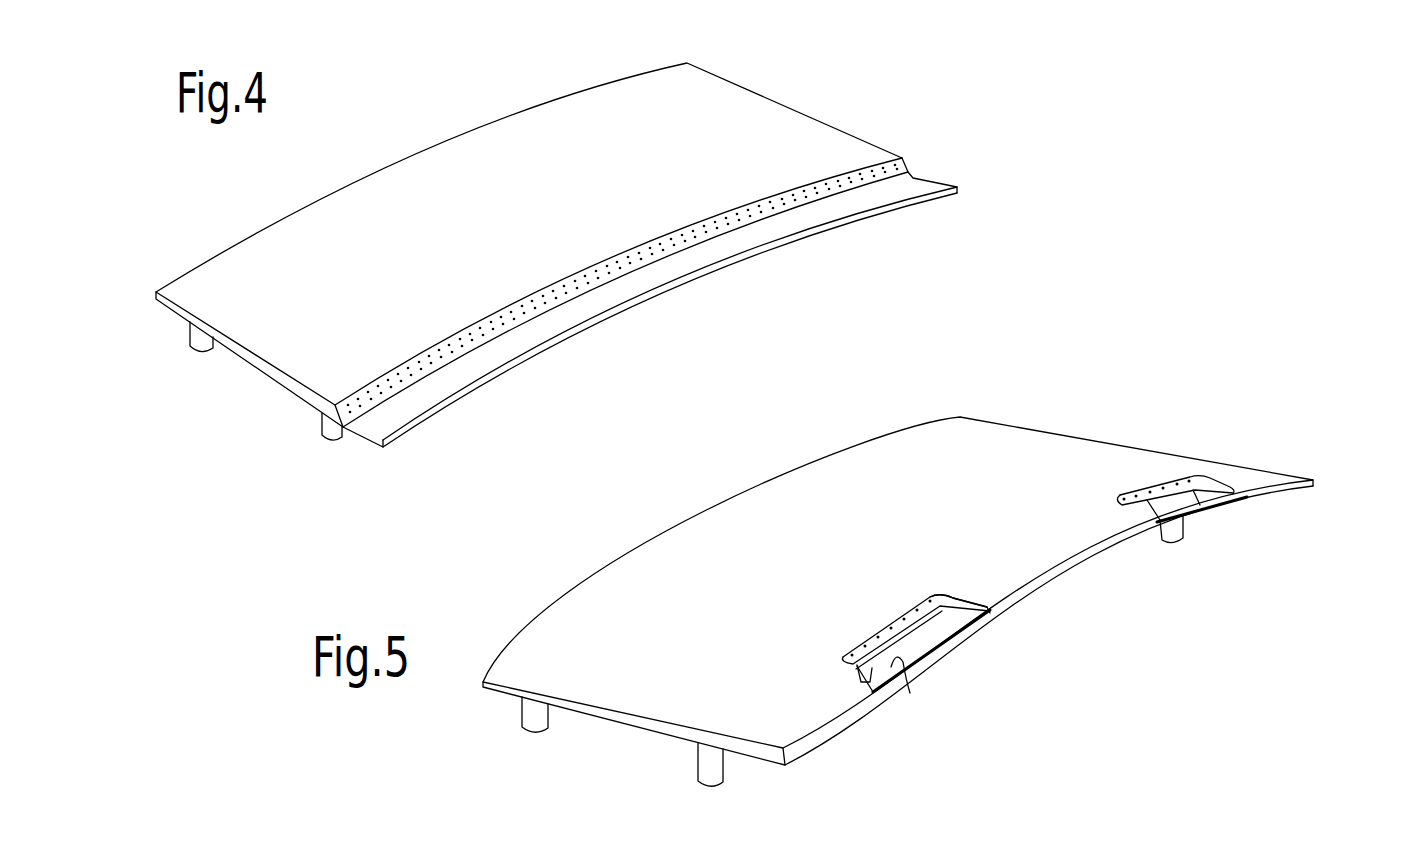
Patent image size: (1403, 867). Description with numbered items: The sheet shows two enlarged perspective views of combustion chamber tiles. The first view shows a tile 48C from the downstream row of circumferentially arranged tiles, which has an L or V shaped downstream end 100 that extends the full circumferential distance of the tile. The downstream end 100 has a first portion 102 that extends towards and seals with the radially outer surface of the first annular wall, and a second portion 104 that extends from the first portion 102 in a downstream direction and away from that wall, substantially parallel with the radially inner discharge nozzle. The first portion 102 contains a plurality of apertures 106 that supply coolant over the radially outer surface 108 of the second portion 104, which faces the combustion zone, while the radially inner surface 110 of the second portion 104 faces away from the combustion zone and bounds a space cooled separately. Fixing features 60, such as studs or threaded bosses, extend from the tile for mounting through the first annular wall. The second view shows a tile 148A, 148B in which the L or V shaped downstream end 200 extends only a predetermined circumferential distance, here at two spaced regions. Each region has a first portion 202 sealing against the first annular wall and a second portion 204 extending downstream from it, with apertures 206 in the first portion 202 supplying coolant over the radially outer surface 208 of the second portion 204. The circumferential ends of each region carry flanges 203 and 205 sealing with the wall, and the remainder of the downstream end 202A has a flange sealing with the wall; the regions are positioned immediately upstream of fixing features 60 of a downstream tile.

In FIG. 4, the tile 48C is at (727, 122).
In FIG. 4, the downstream end 100 is at (660, 289).
In FIG. 4, the first portion 102 is at (905, 168).
In FIG. 4, the second portion 104 is at (545, 343).
In FIG. 4, the apertures 106 is at (887, 182).
In FIG. 4, the radially outer surface 108 is at (467, 378).
In FIG. 4, the radially inner surface 110 is at (360, 433).
In FIG. 4, the fixing feature 60 is at (325, 427).
In FIG. 5, the fixing feature 60 is at (704, 767).
In FIG. 5, the tile 148A is at (988, 443).
In FIG. 5, the tile 148B is at (1049, 625).
In FIG. 5, the downstream end 200 is at (1040, 622).
In FIG. 5, the first portion 202 is at (860, 648).
In FIG. 5, the downstream end 202A is at (1290, 495).
In FIG. 5, the flange 203 is at (850, 667).
In FIG. 5, the second portion 204 is at (923, 648).
In FIG. 5, the flange 205 is at (960, 600).
In FIG. 5, the apertures 206 is at (902, 628).
In FIG. 5, the radially outer surface 208 is at (900, 685).